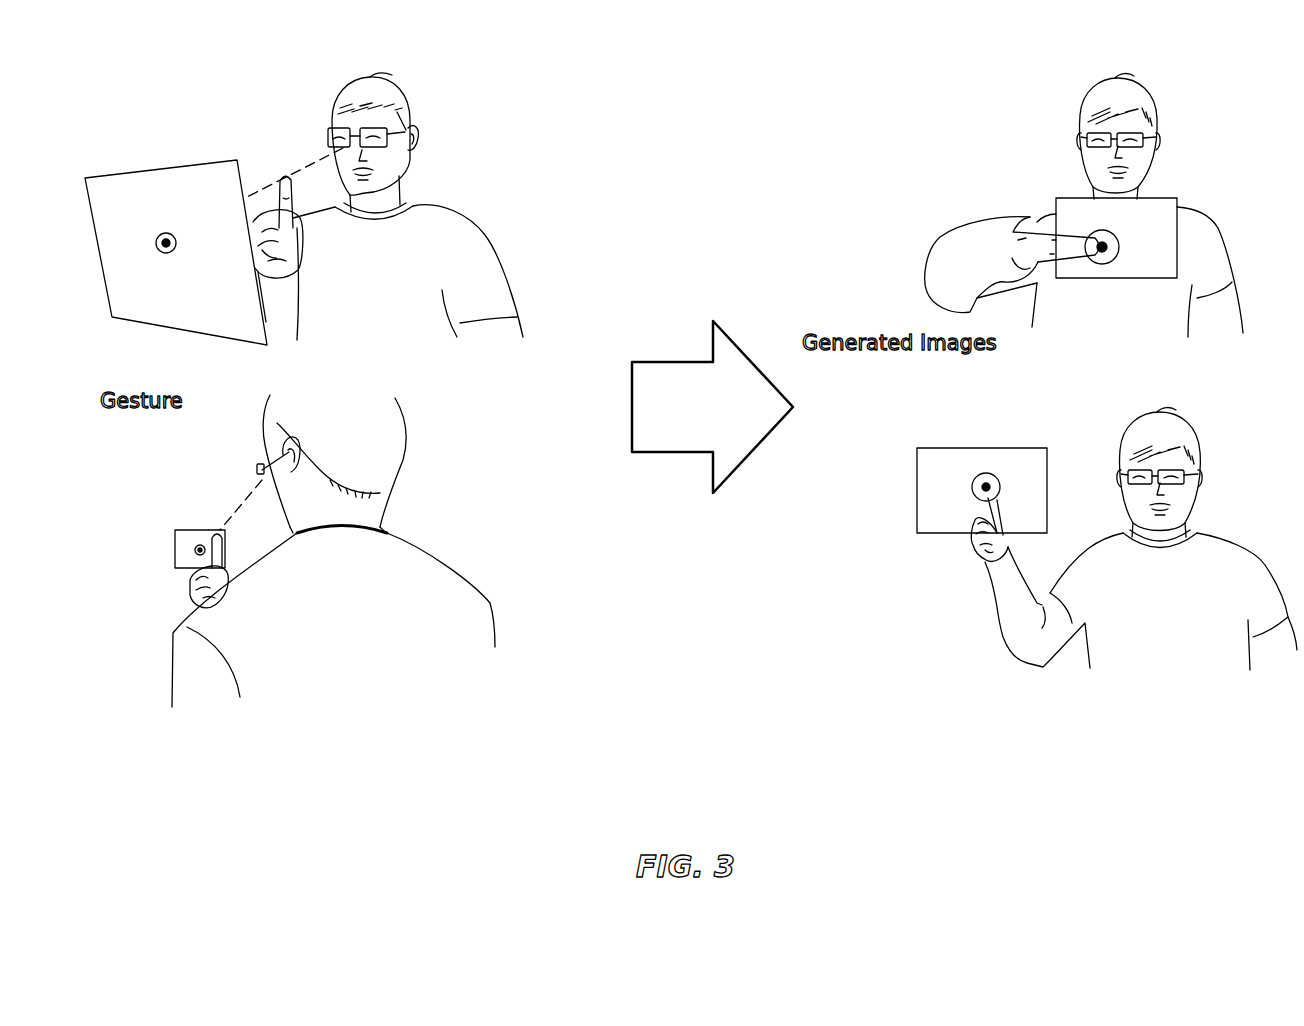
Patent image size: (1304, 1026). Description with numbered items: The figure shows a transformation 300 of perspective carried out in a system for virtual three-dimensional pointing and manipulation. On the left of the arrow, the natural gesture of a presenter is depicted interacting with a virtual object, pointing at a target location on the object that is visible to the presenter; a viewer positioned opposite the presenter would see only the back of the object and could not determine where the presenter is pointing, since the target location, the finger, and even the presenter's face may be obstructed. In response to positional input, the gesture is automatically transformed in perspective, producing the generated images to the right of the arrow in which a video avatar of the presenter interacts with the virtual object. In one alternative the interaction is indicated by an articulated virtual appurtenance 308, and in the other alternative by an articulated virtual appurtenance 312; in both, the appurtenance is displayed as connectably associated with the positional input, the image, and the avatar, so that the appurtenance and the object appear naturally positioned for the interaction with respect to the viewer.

The transformation of perspective 300 is at (342, 760).
The articulated virtual appurtenance 308 is at (973, 222).
The articulated virtual appurtenance 312 is at (1003, 637).